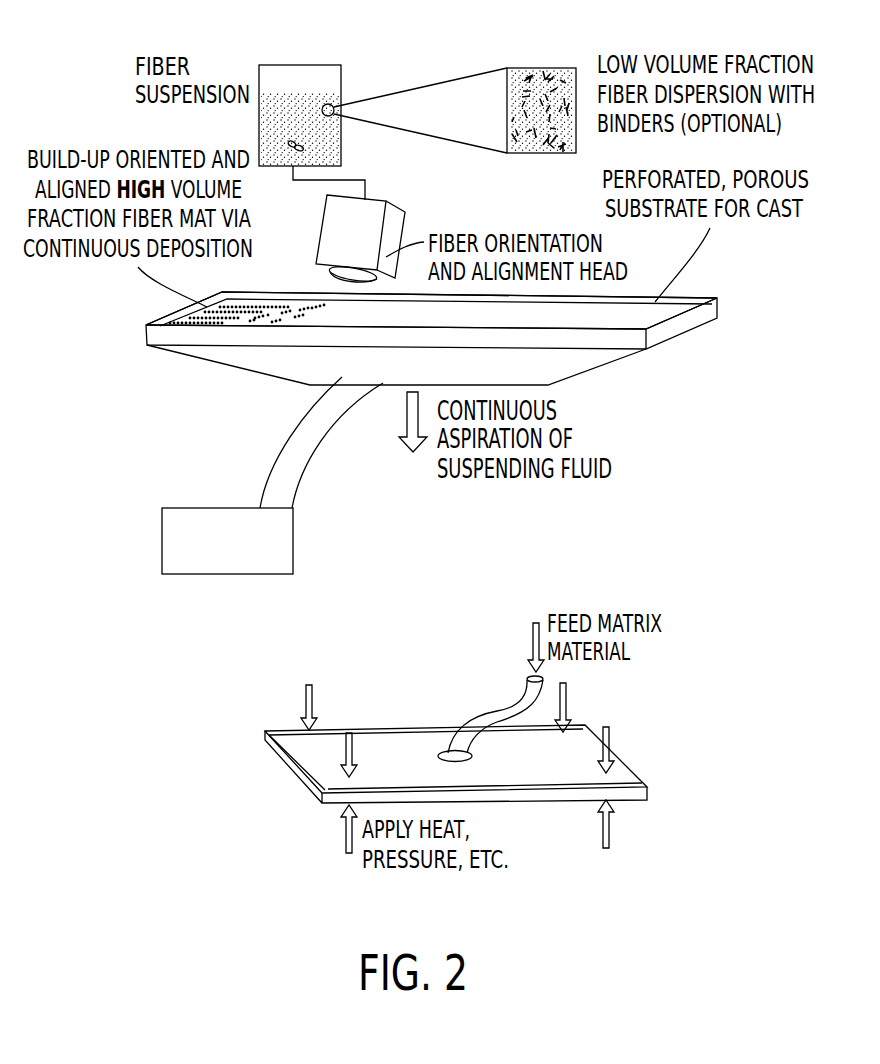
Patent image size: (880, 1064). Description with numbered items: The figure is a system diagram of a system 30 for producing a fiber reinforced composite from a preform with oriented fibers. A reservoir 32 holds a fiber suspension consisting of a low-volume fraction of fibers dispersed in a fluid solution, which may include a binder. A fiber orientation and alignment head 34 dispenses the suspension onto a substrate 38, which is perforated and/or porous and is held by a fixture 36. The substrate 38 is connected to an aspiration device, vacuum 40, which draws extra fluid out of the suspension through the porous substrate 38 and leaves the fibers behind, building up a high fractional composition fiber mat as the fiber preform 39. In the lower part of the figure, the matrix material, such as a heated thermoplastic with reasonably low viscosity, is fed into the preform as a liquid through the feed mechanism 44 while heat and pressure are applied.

The system 30 is at (280, 65).
The reservoir 32 is at (293, 143).
The fiber orientation and alignment head 34 is at (328, 237).
The fixture 36 is at (697, 318).
The substrate 38 is at (635, 310).
The fiber preform 39 is at (178, 311).
The vacuum 40 is at (162, 540).
The feed mechanism 44 is at (524, 691).